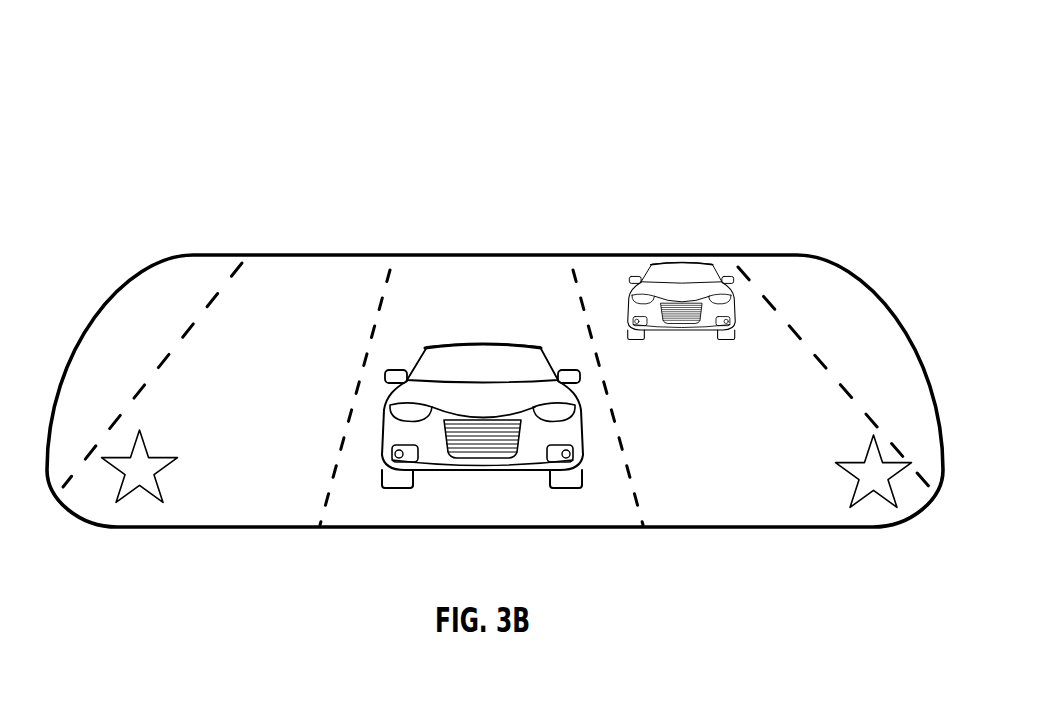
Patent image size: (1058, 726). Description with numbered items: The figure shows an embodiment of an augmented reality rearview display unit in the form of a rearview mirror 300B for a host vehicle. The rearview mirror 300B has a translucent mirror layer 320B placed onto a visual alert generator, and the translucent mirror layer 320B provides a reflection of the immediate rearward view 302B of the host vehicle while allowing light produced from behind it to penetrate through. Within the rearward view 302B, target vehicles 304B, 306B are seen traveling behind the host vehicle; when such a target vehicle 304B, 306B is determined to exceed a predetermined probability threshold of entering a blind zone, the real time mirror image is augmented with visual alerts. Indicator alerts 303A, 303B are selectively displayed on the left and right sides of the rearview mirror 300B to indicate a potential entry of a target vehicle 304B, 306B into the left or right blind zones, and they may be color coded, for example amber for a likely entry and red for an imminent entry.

The rearview mirror 300B is at (761, 89).
The immediate rearward view 302B is at (258, 325).
The translucent mirror layer 320B is at (300, 290).
The target vehicle 304B is at (472, 338).
The target vehicle 306B is at (678, 258).
The indicator alert 303A is at (155, 463).
The indicator alert 303B is at (857, 470).